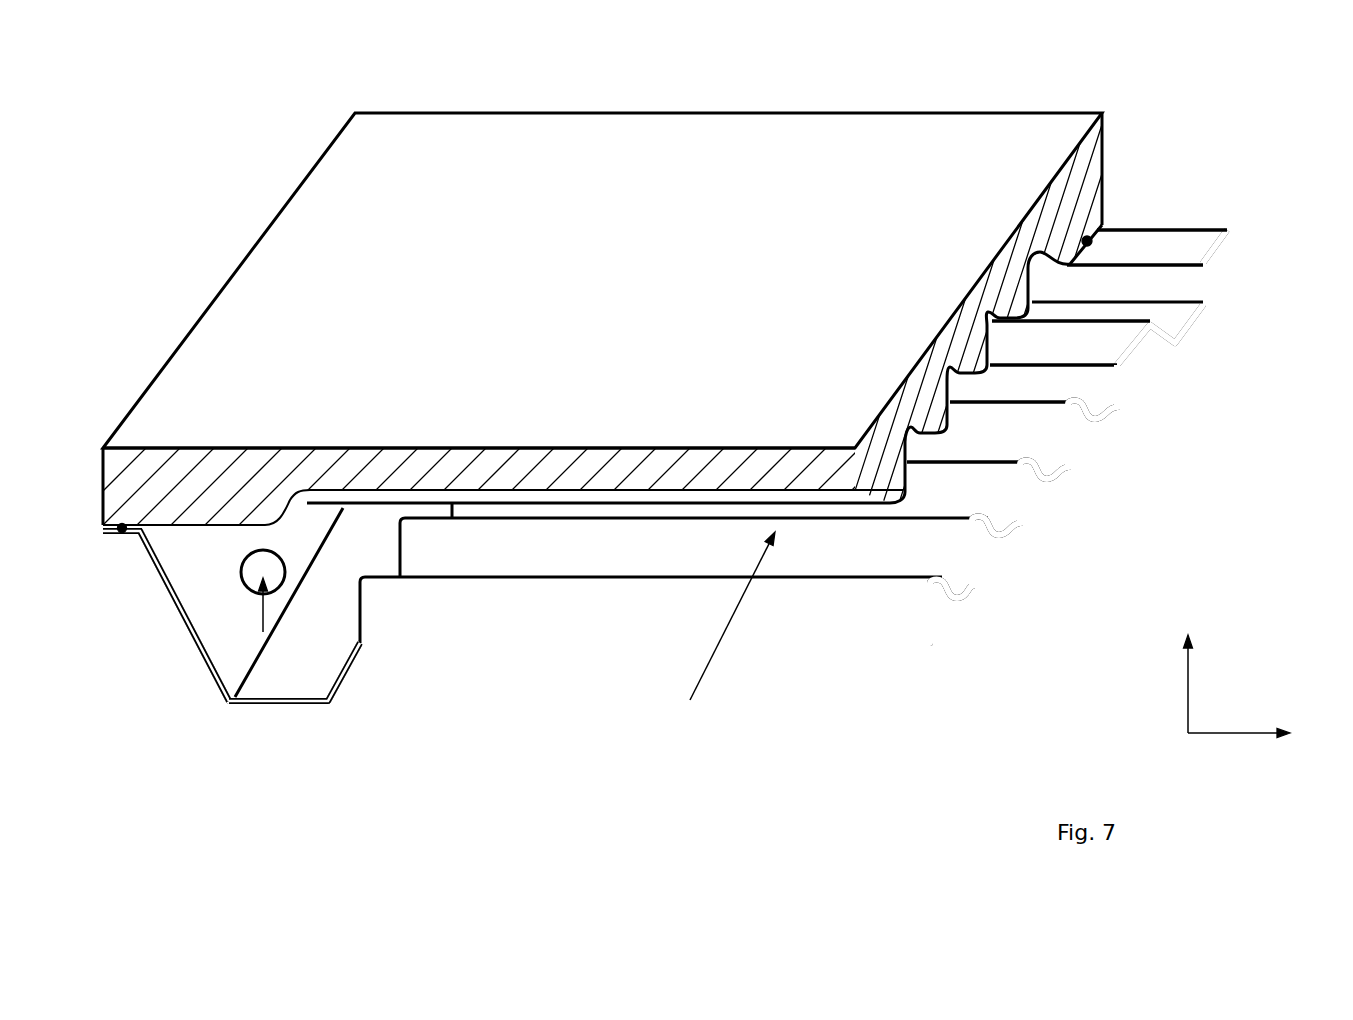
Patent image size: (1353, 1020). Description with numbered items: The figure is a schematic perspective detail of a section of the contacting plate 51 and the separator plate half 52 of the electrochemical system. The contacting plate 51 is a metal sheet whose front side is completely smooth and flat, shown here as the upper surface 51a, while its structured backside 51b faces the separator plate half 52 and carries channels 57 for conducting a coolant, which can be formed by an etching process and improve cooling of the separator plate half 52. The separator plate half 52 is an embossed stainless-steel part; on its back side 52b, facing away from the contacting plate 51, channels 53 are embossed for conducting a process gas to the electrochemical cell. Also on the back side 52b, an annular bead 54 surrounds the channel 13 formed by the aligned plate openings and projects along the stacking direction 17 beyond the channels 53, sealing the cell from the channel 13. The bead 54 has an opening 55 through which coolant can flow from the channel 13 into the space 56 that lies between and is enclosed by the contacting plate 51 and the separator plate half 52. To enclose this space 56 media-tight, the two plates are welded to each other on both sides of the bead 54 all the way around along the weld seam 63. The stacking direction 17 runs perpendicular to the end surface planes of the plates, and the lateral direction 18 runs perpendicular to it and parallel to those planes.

The channel 13 is at (99, 628).
The stacking direction 17 is at (1189, 698).
The lateral direction 18 is at (1245, 735).
The contacting plate 51 is at (905, 106).
The upper surface of plate 51a is at (748, 128).
The backside of the contacting plate 51b is at (910, 462).
The separator plate half 52 is at (1247, 233).
The back side of the separator plate half 52b is at (318, 710).
The channels 53 is at (1105, 437).
The annular bead 54 is at (190, 632).
The opening 55 is at (263, 606).
The space 56 is at (723, 632).
The channels 57 is at (1081, 275).
The weld seam 63 is at (1090, 239).